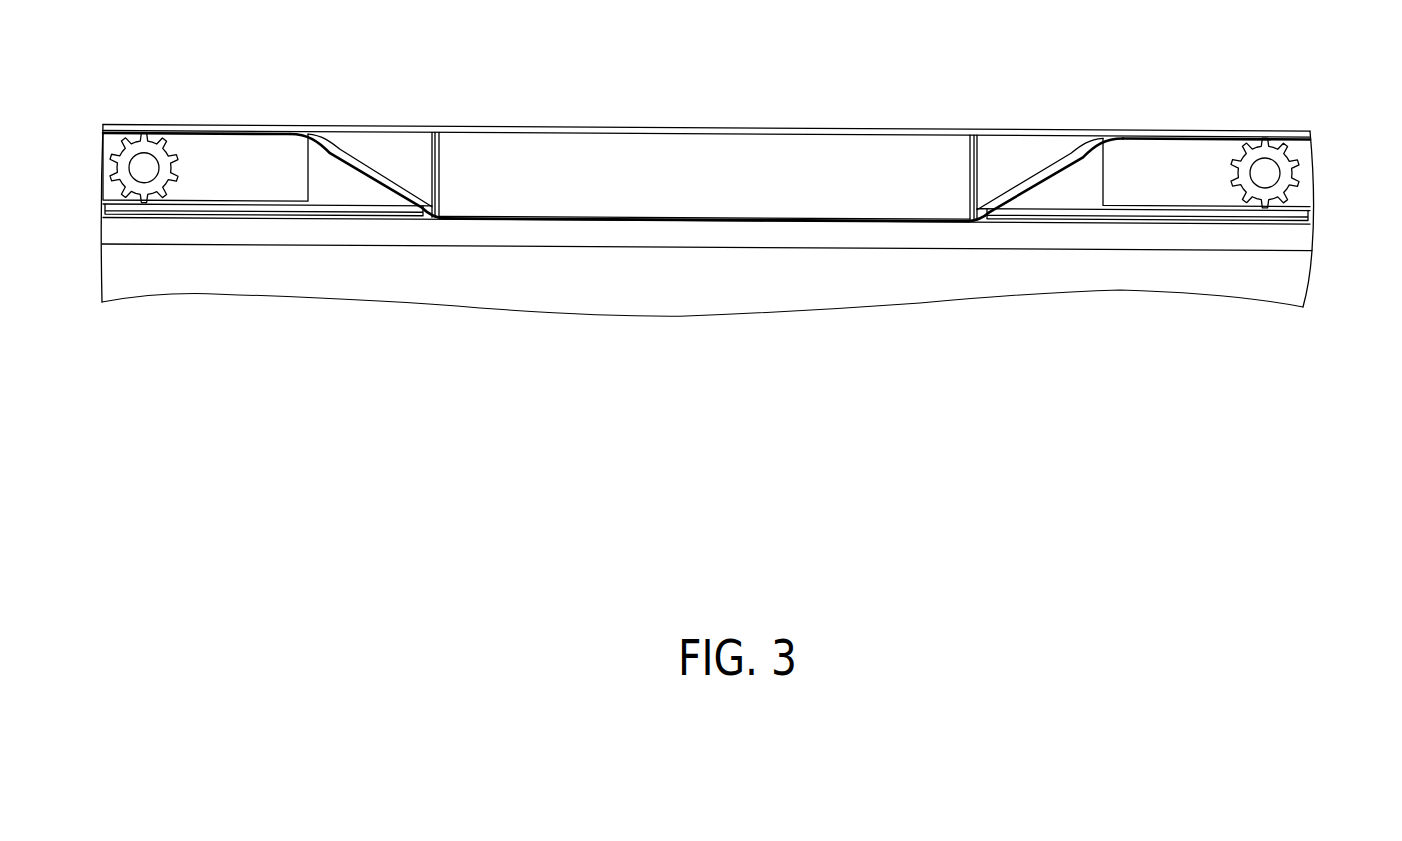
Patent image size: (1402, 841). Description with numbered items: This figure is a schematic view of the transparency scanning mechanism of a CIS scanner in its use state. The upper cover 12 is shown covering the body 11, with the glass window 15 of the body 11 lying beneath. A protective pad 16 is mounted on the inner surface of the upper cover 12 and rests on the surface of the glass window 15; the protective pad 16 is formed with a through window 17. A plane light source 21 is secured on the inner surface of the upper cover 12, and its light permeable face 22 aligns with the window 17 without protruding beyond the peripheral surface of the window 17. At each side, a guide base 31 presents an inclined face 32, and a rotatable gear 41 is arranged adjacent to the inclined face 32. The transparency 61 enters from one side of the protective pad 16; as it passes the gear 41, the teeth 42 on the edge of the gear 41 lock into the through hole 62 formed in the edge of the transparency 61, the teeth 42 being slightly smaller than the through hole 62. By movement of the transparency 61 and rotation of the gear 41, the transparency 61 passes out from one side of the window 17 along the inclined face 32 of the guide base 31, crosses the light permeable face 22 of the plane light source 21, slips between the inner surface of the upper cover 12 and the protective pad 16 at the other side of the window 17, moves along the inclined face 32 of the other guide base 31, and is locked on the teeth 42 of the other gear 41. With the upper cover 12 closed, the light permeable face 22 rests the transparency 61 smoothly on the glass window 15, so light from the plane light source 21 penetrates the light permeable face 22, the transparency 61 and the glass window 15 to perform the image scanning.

The body 11 is at (1293, 277).
The upper cover 12 is at (567, 126).
The glass window 15 is at (697, 232).
The protective pad 16 is at (1067, 208).
The window 17 is at (980, 215).
The plane light source 21 is at (697, 147).
The light permeable face 22 is at (822, 209).
The guide base 31 is at (413, 148).
The inclined face 32 is at (350, 152).
The gear 41 is at (168, 150).
The teeth 42 is at (102, 138).
The transparency 61 is at (547, 218).
The through hole 62 is at (142, 135).